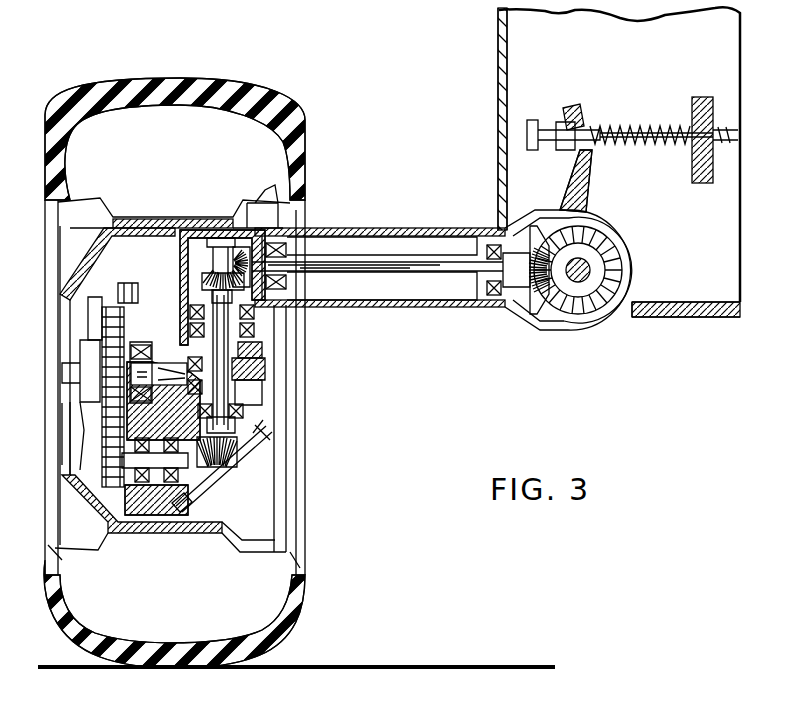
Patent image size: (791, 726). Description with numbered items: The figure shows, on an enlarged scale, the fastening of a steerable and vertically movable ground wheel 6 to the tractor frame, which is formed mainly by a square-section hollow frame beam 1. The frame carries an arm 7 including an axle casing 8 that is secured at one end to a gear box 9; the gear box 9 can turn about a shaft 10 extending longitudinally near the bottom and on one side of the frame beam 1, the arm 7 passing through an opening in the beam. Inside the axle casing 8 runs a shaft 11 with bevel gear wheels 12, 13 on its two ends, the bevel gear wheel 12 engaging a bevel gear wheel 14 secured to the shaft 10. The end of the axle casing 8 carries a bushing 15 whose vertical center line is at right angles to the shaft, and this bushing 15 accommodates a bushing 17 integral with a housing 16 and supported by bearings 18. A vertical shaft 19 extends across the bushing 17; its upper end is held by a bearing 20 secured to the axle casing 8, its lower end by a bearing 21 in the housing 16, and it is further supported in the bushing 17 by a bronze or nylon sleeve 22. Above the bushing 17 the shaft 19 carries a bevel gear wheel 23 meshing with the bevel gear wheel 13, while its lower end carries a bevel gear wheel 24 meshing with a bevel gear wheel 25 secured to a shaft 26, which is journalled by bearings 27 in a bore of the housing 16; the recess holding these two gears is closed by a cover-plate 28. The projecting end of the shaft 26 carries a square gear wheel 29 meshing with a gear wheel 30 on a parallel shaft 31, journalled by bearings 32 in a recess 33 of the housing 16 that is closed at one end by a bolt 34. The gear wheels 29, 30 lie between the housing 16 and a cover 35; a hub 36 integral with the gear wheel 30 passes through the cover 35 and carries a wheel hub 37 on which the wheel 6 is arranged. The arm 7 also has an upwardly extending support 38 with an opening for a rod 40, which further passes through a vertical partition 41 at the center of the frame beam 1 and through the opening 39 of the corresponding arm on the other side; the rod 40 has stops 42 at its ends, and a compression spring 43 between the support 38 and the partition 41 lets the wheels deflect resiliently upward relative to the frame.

The frame beam 1 is at (497, 40).
The ground wheel 6 is at (298, 618).
The arm 7 is at (392, 230).
The axle casing 8 is at (400, 312).
The gear box 9 is at (622, 264).
The shaft 10 is at (590, 277).
The shaft 11 is at (352, 280).
The bevel gear wheel 12 is at (535, 312).
The bevel gear wheel 13 is at (255, 222).
The bevel gear wheel 14 is at (612, 258).
The bushing 15 is at (256, 332).
The housing 16 is at (170, 318).
The bushing 17 is at (256, 312).
The bearings 18 is at (292, 278).
The vertical shaft 19 is at (262, 392).
The bearing 20 is at (213, 240).
The bearing 21 is at (244, 412).
The sleeve 22 is at (205, 277).
The bevel gear wheel 23 is at (208, 274).
The bevel gear wheel 24 is at (238, 452).
The bevel gear wheel 25 is at (222, 472).
The shaft 26 is at (165, 488).
The bearings 27 is at (155, 482).
The cover-plate 28 is at (194, 505).
The square gear wheel 29 is at (90, 490).
The gear wheel 30 is at (106, 302).
The shaft 31 is at (160, 350).
The bearings 32 is at (143, 342).
The recess 33 is at (262, 350).
The bolt 34 is at (265, 370).
The cover 35 is at (99, 308).
The hub 36 is at (95, 402).
The wheel hub 37 is at (62, 466).
The support 38 is at (578, 106).
The opening 39 is at (557, 120).
The rod 40 is at (640, 128).
The vertical partition 41 is at (703, 96).
The stops 42 is at (533, 150).
The compression spring 43 is at (633, 150).